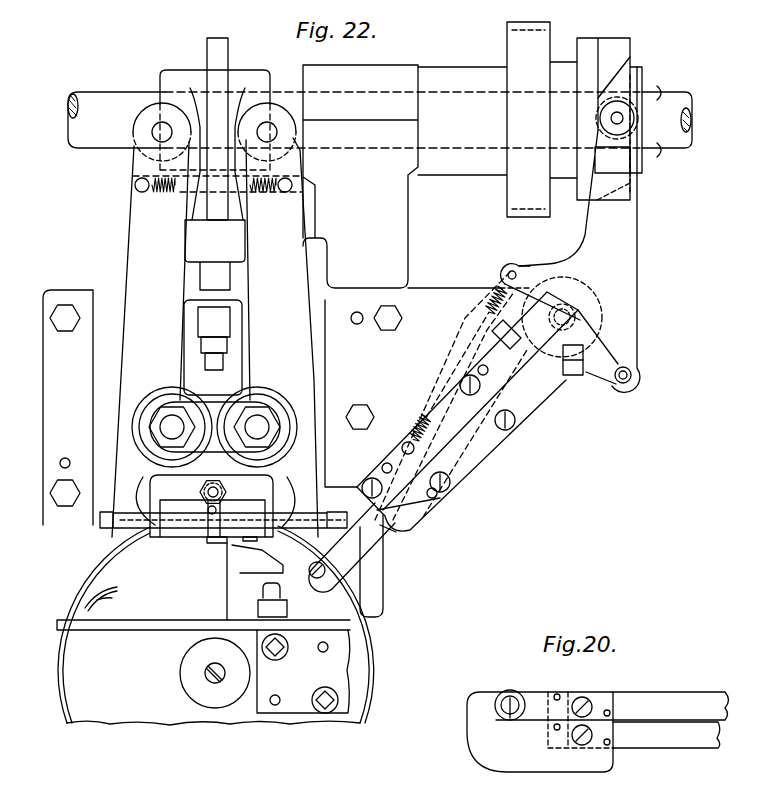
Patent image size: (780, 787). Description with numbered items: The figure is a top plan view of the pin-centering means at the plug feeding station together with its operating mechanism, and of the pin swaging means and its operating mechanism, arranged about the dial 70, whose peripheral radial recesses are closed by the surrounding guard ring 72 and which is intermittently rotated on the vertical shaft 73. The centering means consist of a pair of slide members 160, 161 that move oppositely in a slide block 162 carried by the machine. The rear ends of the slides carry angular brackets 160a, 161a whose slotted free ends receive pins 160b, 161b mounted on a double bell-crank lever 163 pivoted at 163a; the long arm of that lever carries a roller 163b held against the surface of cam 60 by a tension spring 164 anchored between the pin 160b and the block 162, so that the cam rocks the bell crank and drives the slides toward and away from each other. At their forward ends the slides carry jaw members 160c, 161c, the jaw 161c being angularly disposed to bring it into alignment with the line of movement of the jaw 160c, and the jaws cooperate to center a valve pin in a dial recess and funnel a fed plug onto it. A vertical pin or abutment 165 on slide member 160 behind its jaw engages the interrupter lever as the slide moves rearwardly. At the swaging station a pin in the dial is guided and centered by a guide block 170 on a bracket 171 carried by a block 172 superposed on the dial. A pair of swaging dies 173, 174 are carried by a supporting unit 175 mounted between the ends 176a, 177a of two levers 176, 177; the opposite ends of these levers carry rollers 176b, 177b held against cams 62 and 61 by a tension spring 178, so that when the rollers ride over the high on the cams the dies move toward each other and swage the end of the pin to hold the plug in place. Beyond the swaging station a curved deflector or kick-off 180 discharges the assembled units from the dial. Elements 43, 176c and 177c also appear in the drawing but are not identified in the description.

In FIG. 22, the shaft 43 is at (116, 120).
In FIG. 22, the cam 60 is at (629, 60).
In FIG. 22, the cam 61 is at (240, 95).
In FIG. 22, the cam 62 is at (187, 94).
In FIG. 22, the dial 70 is at (227, 560).
In FIG. 22, the guard ring 72 is at (372, 675).
In FIG. 22, the vertical shaft 73 is at (186, 673).
In FIG. 22, the slide member 160 is at (366, 546).
In FIG. 20, the slide member 160 is at (646, 698).
In FIG. 22, the angular bracket 160a is at (535, 292).
In FIG. 22, the pin 160b is at (508, 268).
In FIG. 20, the jaw member 160c is at (530, 695).
In FIG. 20, the slide member 161 is at (637, 735).
In FIG. 22, the angular bracket 161a is at (607, 388).
In FIG. 22, the pin 161b is at (629, 380).
In FIG. 20, the jaw member 161c is at (480, 700).
In FIG. 22, the slide block 162 is at (481, 452).
In FIG. 22, the double bell-crank lever 163 is at (633, 298).
In FIG. 22, the pivot 163a is at (570, 303).
In FIG. 22, the roller 163b is at (632, 106).
In FIG. 22, the tension spring 164 is at (496, 300).
In FIG. 22, the vertical pin or abutment 165 is at (395, 530).
In FIG. 22, the guide block 170 is at (227, 543).
In FIG. 22, the bracket 171 is at (236, 596).
In FIG. 22, the block 172 is at (208, 672).
In FIG. 22, the swaging die 173 is at (140, 532).
In FIG. 22, the swaging die 174 is at (123, 601).
In FIG. 22, the supporting unit 175 is at (211, 504).
In FIG. 22, the lever 176 is at (150, 339).
In FIG. 22, the end of lever 176 176a is at (180, 480).
In FIG. 22, the roller 176b is at (172, 424).
In FIG. 22, the left lever pivot 176c is at (172, 103).
In FIG. 22, the lever 177 is at (282, 337).
In FIG. 22, the end of lever 177 177a is at (288, 498).
In FIG. 22, the roller 177b is at (257, 424).
In FIG. 22, the right lever pivot 177c is at (268, 92).
In FIG. 22, the tension spring 178 is at (165, 194).
In FIG. 22, the curved deflector or kick-off 180 is at (82, 590).